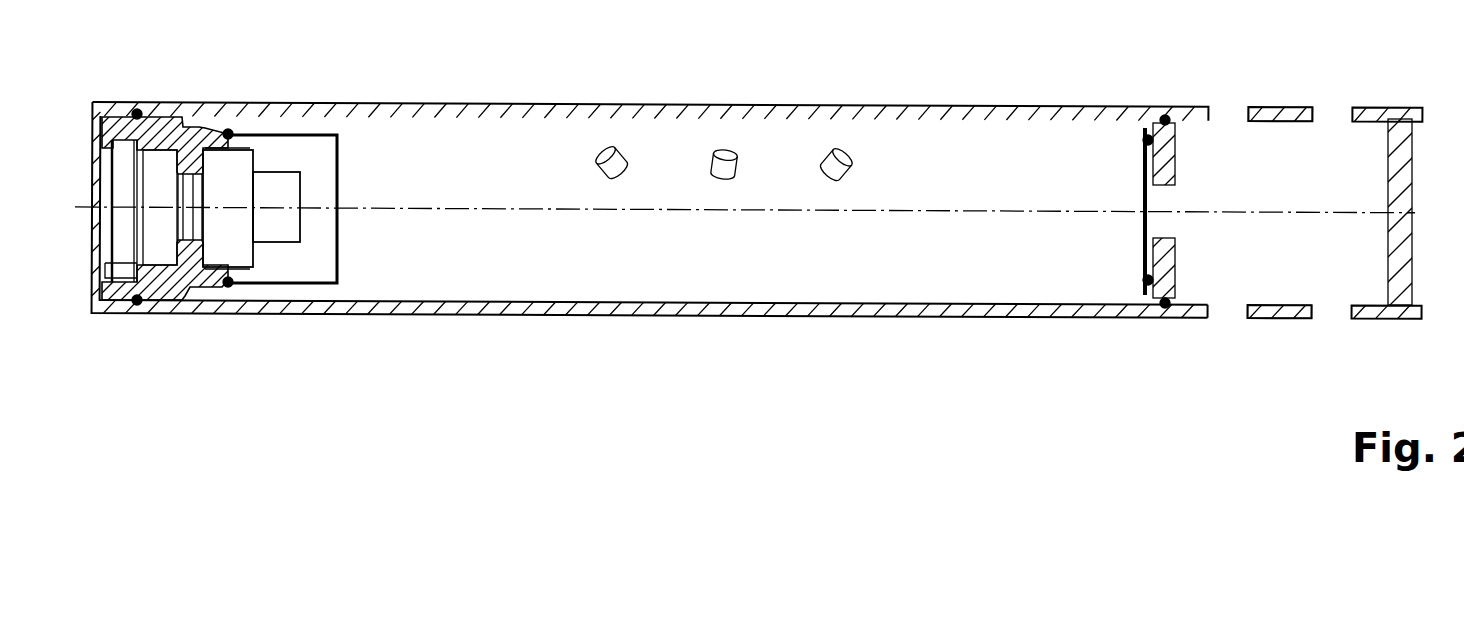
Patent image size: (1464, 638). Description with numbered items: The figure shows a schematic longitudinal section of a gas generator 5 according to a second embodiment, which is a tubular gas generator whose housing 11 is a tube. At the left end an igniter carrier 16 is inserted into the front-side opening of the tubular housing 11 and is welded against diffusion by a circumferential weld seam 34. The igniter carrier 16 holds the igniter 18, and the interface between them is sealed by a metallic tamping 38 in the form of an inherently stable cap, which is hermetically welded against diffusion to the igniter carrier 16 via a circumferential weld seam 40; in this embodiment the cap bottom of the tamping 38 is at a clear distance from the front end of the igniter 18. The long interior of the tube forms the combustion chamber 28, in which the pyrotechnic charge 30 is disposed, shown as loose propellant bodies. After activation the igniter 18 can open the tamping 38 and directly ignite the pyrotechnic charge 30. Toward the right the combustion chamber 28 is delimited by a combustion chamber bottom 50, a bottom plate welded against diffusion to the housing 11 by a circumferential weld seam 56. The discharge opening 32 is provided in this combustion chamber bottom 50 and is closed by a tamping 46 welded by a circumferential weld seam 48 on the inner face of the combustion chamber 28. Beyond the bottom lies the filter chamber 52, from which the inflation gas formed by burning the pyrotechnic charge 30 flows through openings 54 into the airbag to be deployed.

The gas generator 5 is at (837, 67).
The housing 11 is at (352, 311).
The igniter carrier 16 is at (177, 288).
The igniter 18 is at (238, 188).
The combustion chamber 28 is at (480, 137).
The pyrotechnic charge 30 is at (603, 148).
The discharge opening 32 is at (1168, 228).
The circumferential weld seam 34 is at (137, 109).
The tamping 38 is at (345, 245).
The circumferential weld seam 40 is at (228, 129).
The tamping 46 is at (1145, 245).
The circumferential weld seam 48 is at (1145, 285).
The combustion chamber bottom 50 is at (1170, 146).
The filter chamber 52 is at (1375, 140).
The openings 54 is at (1330, 307).
The circumferential weld seam 56 is at (1165, 115).